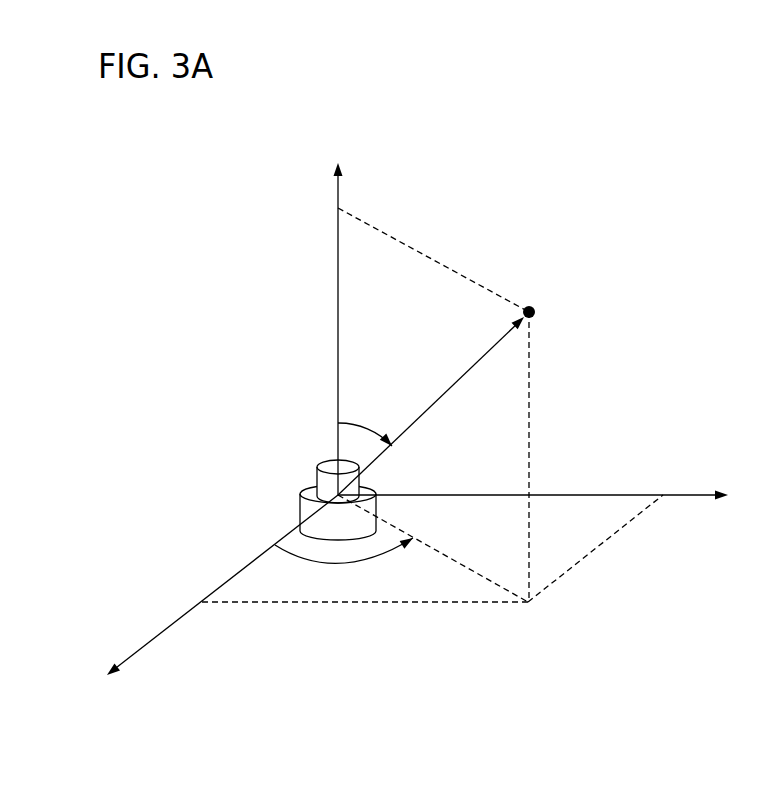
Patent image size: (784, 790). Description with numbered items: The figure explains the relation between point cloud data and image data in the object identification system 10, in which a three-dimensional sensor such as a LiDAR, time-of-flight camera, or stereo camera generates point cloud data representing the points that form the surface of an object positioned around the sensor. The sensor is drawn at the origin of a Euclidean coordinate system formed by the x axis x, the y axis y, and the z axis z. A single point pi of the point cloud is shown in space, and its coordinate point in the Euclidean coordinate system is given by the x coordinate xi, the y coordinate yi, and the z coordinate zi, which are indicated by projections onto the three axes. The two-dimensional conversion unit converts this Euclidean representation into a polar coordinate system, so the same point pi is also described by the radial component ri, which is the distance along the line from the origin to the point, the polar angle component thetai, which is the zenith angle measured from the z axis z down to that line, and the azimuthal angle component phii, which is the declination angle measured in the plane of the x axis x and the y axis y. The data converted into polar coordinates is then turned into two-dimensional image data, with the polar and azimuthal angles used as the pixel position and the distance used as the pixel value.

The object identification system 10 is at (301, 494).
The x axis x is at (222, 598).
The y axis y is at (544, 491).
The z axis z is at (337, 314).
The point pi is at (533, 306).
The radial component ri is at (431, 406).
The polar angle component thetai is at (365, 422).
The azimuthal angle component phii is at (344, 567).
The x coordinate xi is at (345, 597).
The y coordinate yi is at (599, 531).
The z coordinate zi is at (418, 251).